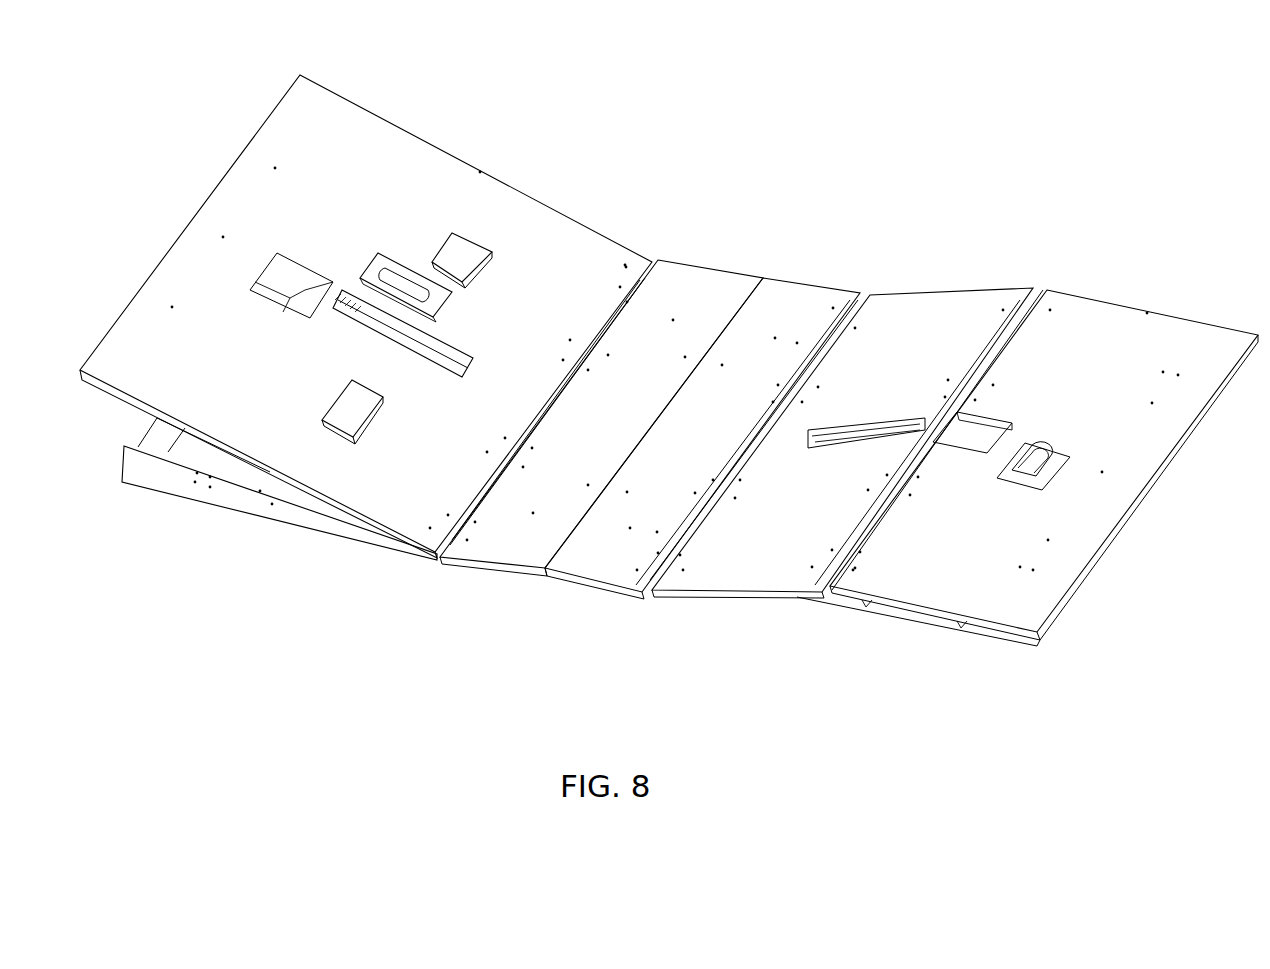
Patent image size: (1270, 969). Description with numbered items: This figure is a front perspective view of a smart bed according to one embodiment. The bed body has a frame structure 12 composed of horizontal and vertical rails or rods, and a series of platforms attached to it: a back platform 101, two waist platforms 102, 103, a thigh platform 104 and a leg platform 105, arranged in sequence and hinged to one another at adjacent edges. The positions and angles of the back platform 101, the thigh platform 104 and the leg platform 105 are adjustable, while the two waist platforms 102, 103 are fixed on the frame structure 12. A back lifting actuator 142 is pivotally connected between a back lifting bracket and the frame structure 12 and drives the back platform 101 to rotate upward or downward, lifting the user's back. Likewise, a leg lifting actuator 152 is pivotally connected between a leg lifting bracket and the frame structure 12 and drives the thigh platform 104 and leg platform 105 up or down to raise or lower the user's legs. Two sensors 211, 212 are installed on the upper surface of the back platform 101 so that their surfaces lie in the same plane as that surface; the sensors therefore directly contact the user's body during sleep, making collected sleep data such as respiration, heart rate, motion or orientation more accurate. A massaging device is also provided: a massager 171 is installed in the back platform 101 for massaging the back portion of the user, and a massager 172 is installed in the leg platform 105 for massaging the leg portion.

The frame structure 12 is at (207, 482).
The back platform 101 is at (563, 267).
The waist platform 102 is at (683, 318).
The waist platform 103 is at (785, 327).
The thigh platform 104 is at (937, 338).
The leg platform 105 is at (1097, 373).
The back lifting actuator 142 is at (440, 353).
The leg lifting actuator 152 is at (840, 440).
The massager 171 is at (392, 268).
The massager 172 is at (1033, 470).
The sensor 211 is at (350, 412).
The sensor 212 is at (468, 252).